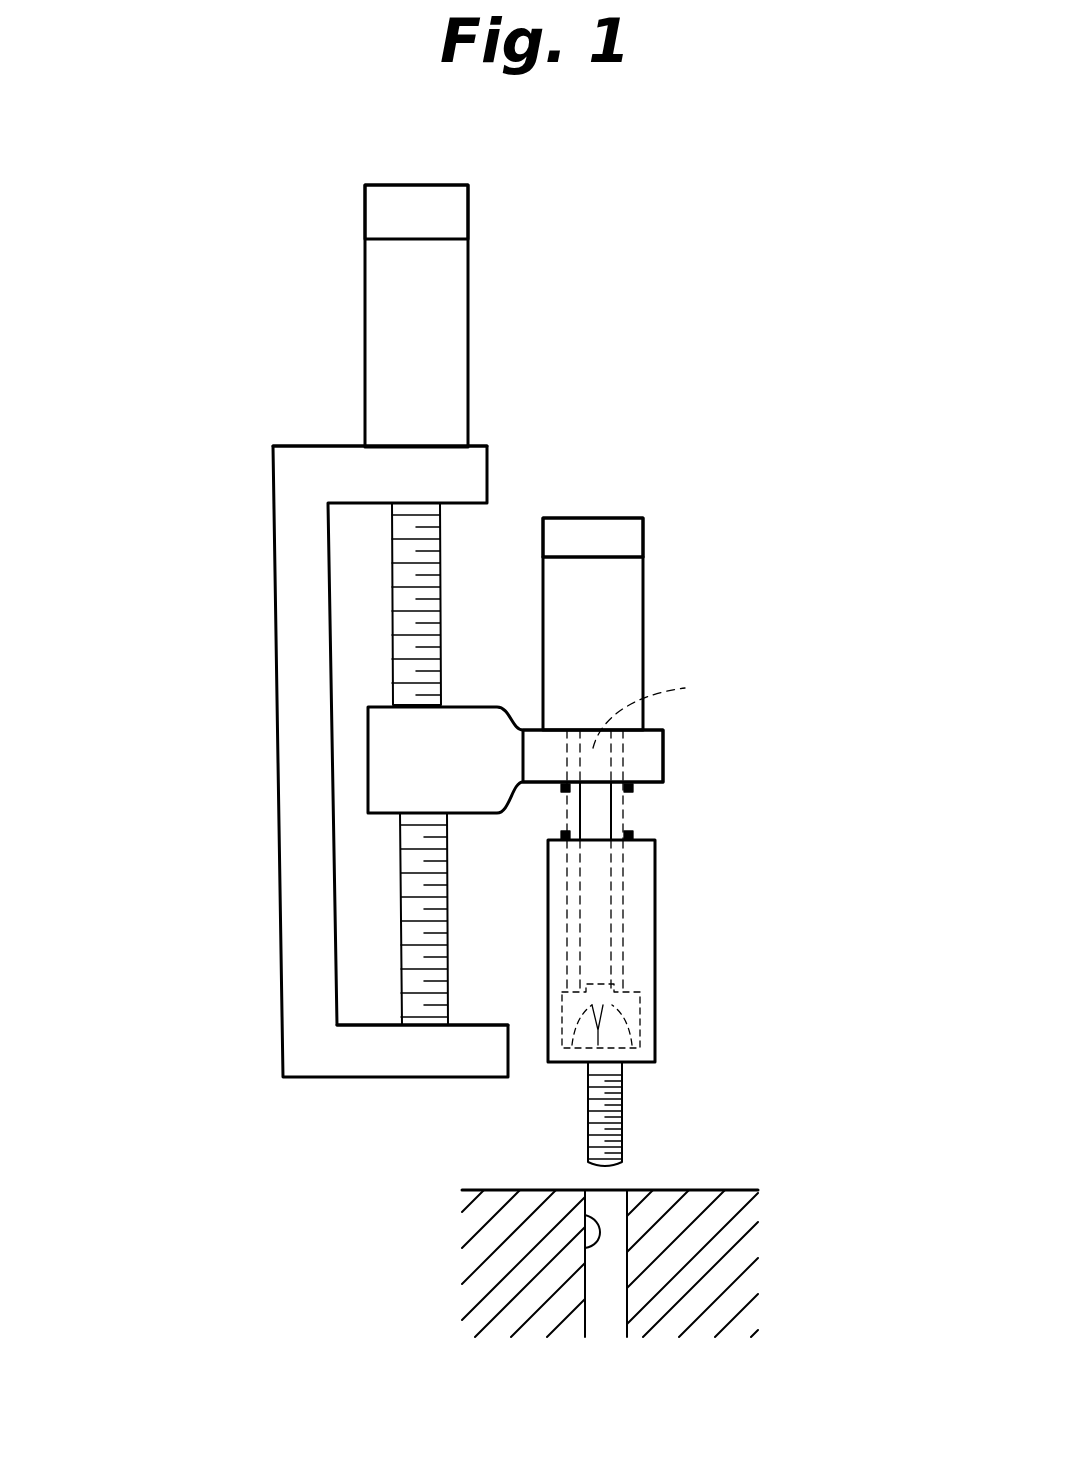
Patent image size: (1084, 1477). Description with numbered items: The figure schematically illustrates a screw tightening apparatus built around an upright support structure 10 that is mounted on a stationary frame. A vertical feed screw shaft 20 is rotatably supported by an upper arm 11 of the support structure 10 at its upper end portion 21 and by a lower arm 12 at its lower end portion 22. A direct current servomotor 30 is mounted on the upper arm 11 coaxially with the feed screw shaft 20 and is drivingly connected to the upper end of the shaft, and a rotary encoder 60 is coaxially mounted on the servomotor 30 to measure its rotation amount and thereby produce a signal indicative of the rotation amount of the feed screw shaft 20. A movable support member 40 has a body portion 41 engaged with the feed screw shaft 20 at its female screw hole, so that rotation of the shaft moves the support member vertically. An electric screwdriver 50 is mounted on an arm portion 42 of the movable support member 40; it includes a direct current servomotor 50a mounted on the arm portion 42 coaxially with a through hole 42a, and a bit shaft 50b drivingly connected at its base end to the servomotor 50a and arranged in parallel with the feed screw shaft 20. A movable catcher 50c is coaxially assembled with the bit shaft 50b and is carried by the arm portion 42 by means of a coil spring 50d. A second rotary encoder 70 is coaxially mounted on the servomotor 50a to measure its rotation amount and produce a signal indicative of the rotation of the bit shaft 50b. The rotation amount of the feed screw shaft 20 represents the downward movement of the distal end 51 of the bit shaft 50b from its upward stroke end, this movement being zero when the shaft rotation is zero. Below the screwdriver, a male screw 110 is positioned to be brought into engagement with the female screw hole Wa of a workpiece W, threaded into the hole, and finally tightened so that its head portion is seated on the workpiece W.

The upright support structure 10 is at (262, 758).
The upper arm 11 is at (468, 468).
The lower arm 12 is at (488, 1062).
The feed screw shaft 20 is at (362, 764).
The upper end portion 21 is at (393, 540).
The lower end portion 22 is at (450, 985).
The direct current servomotor 30 is at (450, 335).
The encoder 60 is at (422, 185).
The movable support member 40 is at (572, 720).
The body portion 41 is at (473, 795).
The arm portion 42 is at (665, 752).
The through hole 42a is at (670, 709).
The electric screwdriver 50 is at (640, 755).
The direct current servomotor 50a is at (620, 577).
The bit shaft 50b is at (598, 812).
The movable catcher 50c is at (655, 905).
The coil spring 50d is at (567, 818).
The distal end 51 is at (655, 1040).
The encoder 70 is at (598, 515).
The male screw 110 is at (624, 1105).
The workpiece W is at (730, 1190).
The female screw hole Wa is at (585, 1245).